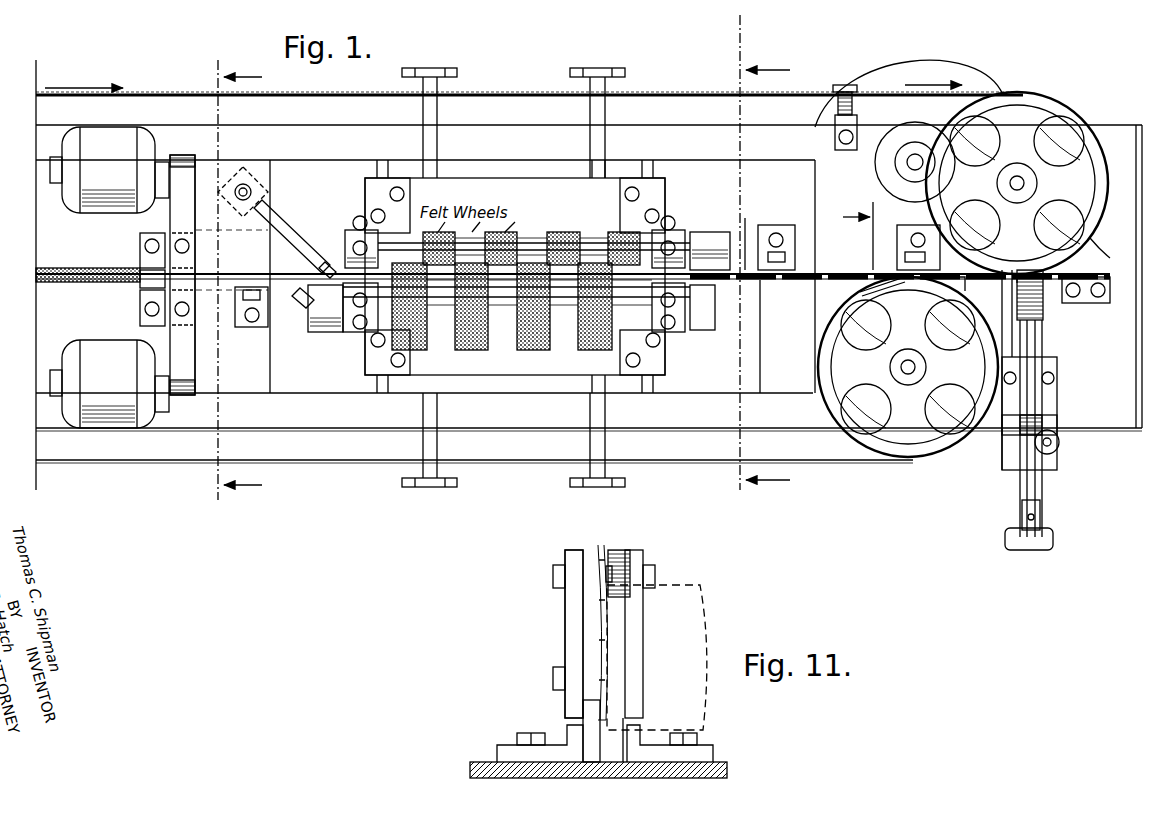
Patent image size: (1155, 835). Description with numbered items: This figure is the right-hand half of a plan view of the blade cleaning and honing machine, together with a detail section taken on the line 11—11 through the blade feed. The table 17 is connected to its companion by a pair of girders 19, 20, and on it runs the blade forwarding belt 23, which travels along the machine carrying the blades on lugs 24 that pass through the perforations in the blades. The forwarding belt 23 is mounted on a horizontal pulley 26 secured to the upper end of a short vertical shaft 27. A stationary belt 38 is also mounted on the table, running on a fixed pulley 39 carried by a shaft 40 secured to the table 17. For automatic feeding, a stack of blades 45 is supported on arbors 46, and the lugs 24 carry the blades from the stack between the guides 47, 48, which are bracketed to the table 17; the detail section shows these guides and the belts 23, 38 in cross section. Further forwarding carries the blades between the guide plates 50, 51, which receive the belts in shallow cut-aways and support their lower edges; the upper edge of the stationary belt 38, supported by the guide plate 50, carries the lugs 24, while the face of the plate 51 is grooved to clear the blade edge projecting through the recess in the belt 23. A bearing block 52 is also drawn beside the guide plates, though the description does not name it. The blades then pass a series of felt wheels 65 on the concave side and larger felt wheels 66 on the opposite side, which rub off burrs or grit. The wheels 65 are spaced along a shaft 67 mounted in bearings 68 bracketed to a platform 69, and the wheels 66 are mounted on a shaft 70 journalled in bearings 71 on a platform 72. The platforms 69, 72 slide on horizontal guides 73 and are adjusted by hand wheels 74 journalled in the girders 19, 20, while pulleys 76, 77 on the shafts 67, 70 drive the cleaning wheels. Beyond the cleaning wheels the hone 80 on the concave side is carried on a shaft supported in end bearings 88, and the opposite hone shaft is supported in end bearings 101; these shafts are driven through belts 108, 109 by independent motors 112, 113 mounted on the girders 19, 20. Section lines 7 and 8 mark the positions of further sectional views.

In FIG. 1, the section line 7- 7 is at (762, 264).
In FIG. 1, the section line 8- 8 is at (237, 286).
In FIG. 1, the drive pulley / belt guide 11 is at (866, 322).
In FIG. 1, the table 17 is at (1120, 125).
In FIG. 1, the girder 19 is at (312, 128).
In FIG. 1, the girder 20 is at (280, 432).
In FIG. 1, the blade forwarding belt 23 is at (645, 93).
In FIG. 11, the blade forwarding belt 23 is at (598, 632).
In FIG. 1, the lug 24 is at (1088, 242).
In FIG. 1, the horizontal pulley 26 is at (1003, 95).
In FIG. 1, the vertical shaft 27 is at (1028, 183).
In FIG. 1, the stationary belt 38 is at (305, 462).
In FIG. 11, the stationary belt 38 is at (600, 637).
In FIG. 1, the fixed pulley 39 is at (918, 452).
In FIG. 11, the fixed pulley 39 is at (703, 732).
In FIG. 1, the shaft 40 is at (927, 367).
In FIG. 1, the stack of blades 45 is at (1043, 310).
In FIG. 1, the arbor 46 is at (1045, 338).
In FIG. 1, the guide 47 is at (860, 292).
In FIG. 11, the guide 47 is at (592, 548).
In FIG. 1, the guide 48 is at (882, 250).
In FIG. 11, the guide 48 is at (620, 548).
In FIG. 1, the guide plate 50 is at (738, 270).
In FIG. 1, the guide plate 51 is at (770, 283).
In FIG. 1, the bearing block 52 is at (268, 325).
In FIG. 1, the felt wheel 65 is at (573, 255).
In FIG. 1, the felt wheel 66 is at (535, 352).
In FIG. 1, the shaft 67 is at (527, 262).
In FIG. 1, the bearing 68 is at (347, 232).
In FIG. 1, the platform 69 is at (462, 178).
In FIG. 1, the shaft 70 is at (700, 300).
In FIG. 1, the bearing 71 is at (352, 335).
In FIG. 1, the platform 72 is at (470, 376).
In FIG. 1, the horizontal guide 73 is at (393, 160).
In FIG. 1, the hand wheel 74 is at (570, 73).
In FIG. 1, the pulley 76 is at (722, 233).
In FIG. 1, the pulley 77 is at (323, 335).
In FIG. 1, the hone 80 is at (62, 262).
In FIG. 1, the end bearing 88 is at (140, 252).
In FIG. 1, the end bearing 101 is at (140, 300).
In FIG. 1, the belt 108 is at (197, 187).
In FIG. 1, the belt 109 is at (197, 345).
In FIG. 1, the motor 112 is at (155, 135).
In FIG. 1, the motor 113 is at (88, 342).